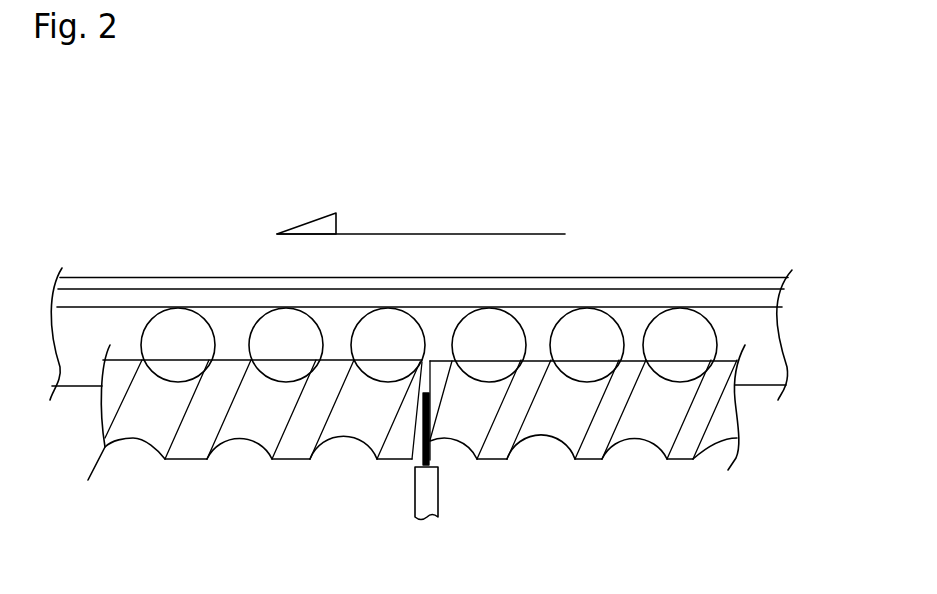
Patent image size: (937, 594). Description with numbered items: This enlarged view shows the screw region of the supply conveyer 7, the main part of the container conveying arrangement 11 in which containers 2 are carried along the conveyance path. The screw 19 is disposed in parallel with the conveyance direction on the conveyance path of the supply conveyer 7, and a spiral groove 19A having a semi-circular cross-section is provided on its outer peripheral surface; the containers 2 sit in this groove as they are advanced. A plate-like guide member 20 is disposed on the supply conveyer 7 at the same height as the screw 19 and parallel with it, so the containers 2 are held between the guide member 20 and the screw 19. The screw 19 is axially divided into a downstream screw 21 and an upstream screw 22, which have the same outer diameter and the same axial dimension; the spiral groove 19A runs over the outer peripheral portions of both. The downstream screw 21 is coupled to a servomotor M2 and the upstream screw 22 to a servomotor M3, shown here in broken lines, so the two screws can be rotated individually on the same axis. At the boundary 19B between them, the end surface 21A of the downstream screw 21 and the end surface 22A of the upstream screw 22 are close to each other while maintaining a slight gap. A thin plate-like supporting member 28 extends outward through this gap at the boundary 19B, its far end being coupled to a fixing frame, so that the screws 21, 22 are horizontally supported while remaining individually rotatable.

The fixing device 11 is at (597, 196).
The supply conveyer 7 is at (730, 283).
The guide member 20 is at (630, 298).
The roller 2 is at (175, 323).
The screw 19 is at (416, 466).
The downstream screw 21 is at (190, 447).
The end surface of downstream screw 21A is at (417, 368).
The upstream screw 22 is at (590, 457).
The end surface of upstream screw 22A is at (424, 370).
The spiral groove 19A is at (333, 440).
The boundary 19B is at (420, 400).
The supporting member 28 is at (428, 447).
The servomotor M2 is at (100, 410).
The servomotor M3 is at (740, 407).